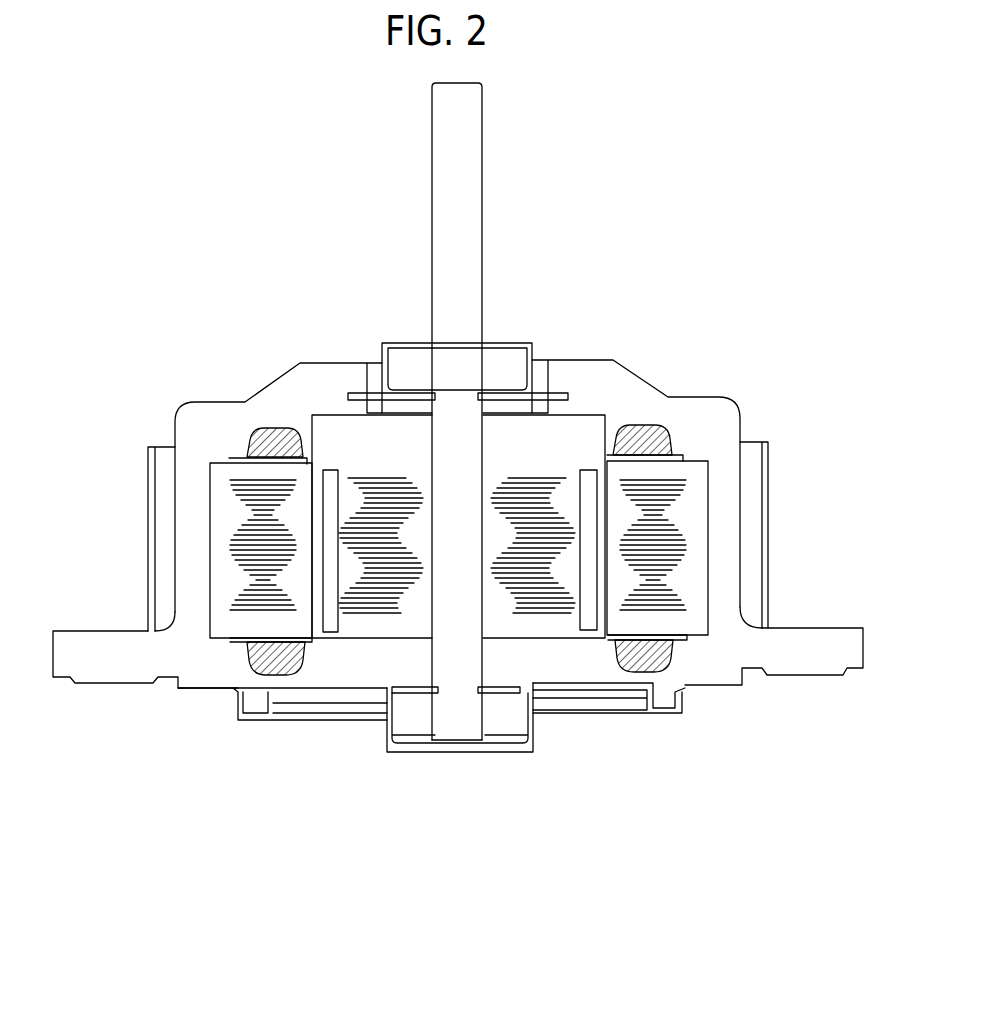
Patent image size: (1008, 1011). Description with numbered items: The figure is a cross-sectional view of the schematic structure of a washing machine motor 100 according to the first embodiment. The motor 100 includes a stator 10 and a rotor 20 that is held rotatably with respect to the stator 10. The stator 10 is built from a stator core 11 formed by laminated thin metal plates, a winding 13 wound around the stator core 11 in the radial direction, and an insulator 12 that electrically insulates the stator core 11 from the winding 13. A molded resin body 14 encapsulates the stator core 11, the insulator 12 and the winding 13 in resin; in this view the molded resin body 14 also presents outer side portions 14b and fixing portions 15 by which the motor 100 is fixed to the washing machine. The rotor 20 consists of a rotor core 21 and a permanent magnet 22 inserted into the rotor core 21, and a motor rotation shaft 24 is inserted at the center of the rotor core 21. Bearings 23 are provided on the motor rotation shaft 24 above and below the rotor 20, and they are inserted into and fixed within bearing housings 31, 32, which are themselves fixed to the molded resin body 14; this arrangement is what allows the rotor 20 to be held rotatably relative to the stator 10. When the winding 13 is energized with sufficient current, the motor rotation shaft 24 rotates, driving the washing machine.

The motor 100 is at (613, 348).
The stator 10 is at (712, 686).
The stator core 11 is at (690, 558).
The insulator 12 is at (680, 456).
The winding 13 is at (662, 440).
The molded resin body 14 is at (635, 413).
The flange portion of housing 14b is at (167, 513).
The fixing portions 15 is at (102, 657).
The rotor 20 is at (410, 462).
The rotor core 21 is at (387, 510).
The permanent magnet 22 is at (333, 620).
The bearings 23 is at (500, 367).
The motor rotation shaft 24 is at (463, 225).
The bearing housing 31 is at (535, 343).
The bearing housing 32 is at (537, 750).